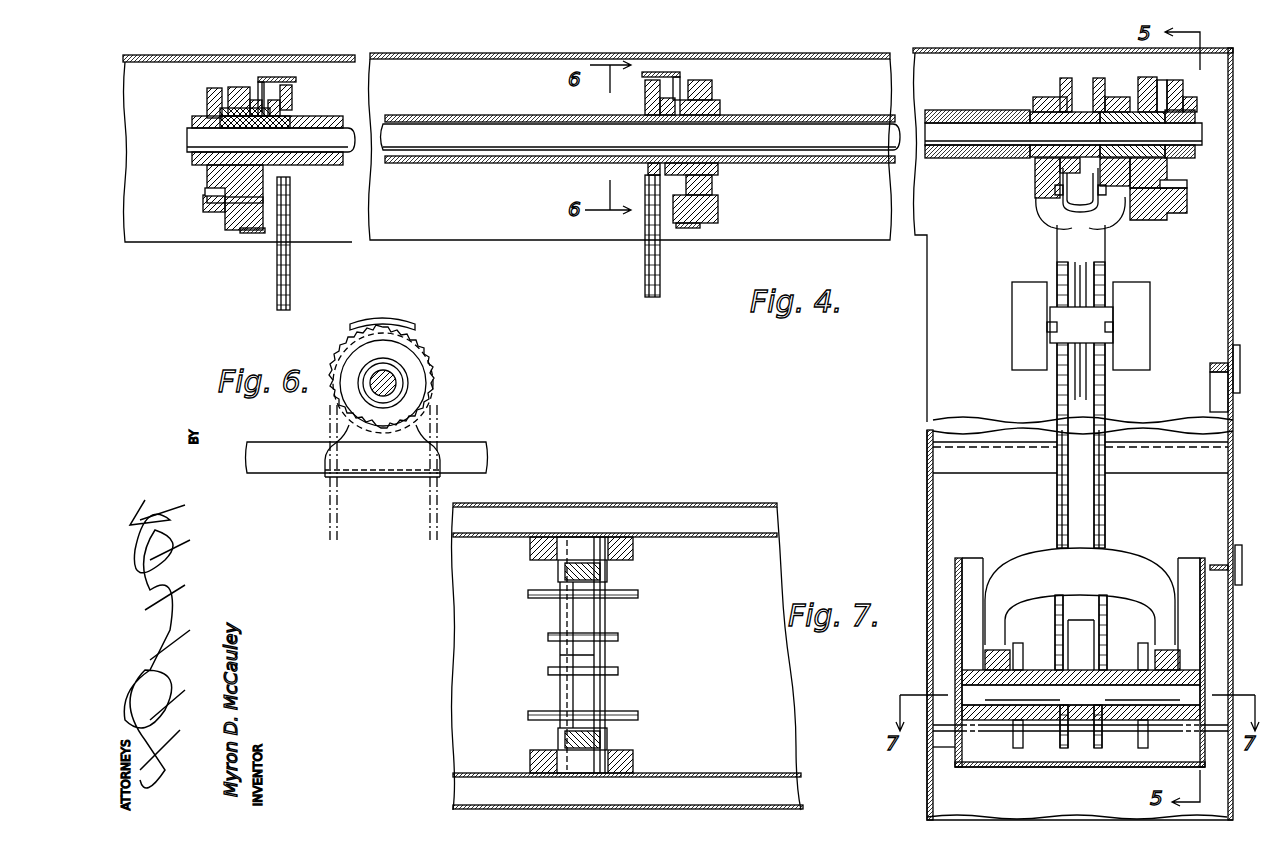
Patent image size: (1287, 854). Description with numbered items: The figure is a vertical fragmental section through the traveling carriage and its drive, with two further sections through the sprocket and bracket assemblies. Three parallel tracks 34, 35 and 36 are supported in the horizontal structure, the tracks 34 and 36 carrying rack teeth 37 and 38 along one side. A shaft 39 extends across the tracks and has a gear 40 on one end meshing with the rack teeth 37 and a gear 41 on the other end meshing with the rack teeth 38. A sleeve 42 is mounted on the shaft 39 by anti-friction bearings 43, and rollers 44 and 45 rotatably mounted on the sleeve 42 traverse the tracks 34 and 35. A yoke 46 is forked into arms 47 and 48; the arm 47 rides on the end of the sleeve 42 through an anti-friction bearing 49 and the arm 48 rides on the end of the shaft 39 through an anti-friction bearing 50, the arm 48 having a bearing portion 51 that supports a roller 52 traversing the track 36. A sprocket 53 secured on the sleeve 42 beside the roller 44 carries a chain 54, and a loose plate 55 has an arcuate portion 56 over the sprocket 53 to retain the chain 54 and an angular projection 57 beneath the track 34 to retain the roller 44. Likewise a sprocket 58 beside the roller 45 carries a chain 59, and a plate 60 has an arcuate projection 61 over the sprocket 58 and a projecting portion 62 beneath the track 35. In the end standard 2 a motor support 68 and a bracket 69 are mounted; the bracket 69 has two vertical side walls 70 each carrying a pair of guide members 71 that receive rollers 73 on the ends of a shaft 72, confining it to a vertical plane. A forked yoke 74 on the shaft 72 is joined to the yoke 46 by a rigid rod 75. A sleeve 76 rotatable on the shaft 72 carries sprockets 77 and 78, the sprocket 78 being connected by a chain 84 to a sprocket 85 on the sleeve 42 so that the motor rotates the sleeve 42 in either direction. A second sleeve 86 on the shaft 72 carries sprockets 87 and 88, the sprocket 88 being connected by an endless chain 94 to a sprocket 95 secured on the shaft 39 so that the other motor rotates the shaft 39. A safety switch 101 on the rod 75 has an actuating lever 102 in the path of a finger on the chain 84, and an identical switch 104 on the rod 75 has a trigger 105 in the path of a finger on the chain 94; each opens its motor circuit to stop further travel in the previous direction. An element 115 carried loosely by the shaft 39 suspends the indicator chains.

In FIG. 7, the end standard 2 is at (641, 503).
In FIG. 4, the track 34 is at (228, 224).
In FIG. 4, the track 35 is at (716, 205).
In FIG. 6, the track 35 is at (488, 457).
In FIG. 4, the track 36 is at (1158, 219).
In FIG. 4, the rack teeth 37 is at (205, 191).
In FIG. 4, the rack teeth 38 is at (1187, 193).
In FIG. 4, the shaft 39 is at (487, 130).
In FIG. 6, the shaft 39 is at (378, 398).
In FIG. 4, the gear 40 is at (207, 101).
In FIG. 4, the gear 41 is at (1184, 95).
In FIG. 4, the sleeve 42 is at (560, 115).
In FIG. 6, the sleeve 42 is at (388, 362).
In FIG. 4, the anti-friction bearings 43 is at (258, 123).
In FIG. 4, the roller 44 is at (240, 87).
In FIG. 4, the roller 45 is at (704, 81).
In FIG. 4, the yoke 46 is at (1093, 238).
In FIG. 4, the yoke arm 47 is at (1036, 185).
In FIG. 4, the yoke arm 48 is at (1113, 186).
In FIG. 4, the anti-friction bearing 49 is at (1033, 106).
In FIG. 4, the anti-friction bearing 50 is at (1137, 122).
In FIG. 4, the bearing portion 51 is at (1162, 84).
In FIG. 4, the roller 52 is at (1148, 77).
In FIG. 4, the sprocket 53 is at (294, 98).
In FIG. 4, the chain 54 is at (292, 283).
In FIG. 4, the plate 55 is at (258, 92).
In FIG. 4, the arcuate portion 56 is at (296, 79).
In FIG. 4, the angular projection 57 is at (253, 233).
In FIG. 4, the sprocket 58 is at (648, 170).
In FIG. 6, the sprocket 58 is at (425, 366).
In FIG. 4, the chain 59 is at (646, 262).
In FIG. 6, the chain 59 is at (337, 524).
In FIG. 4, the plate 60 is at (721, 96).
In FIG. 6, the plate 60 is at (383, 452).
In FIG. 4, the arcuate projection 61 is at (655, 72).
In FIG. 6, the arcuate projection 61 is at (403, 322).
In FIG. 4, the projecting portion 62 is at (690, 228).
In FIG. 6, the projecting portion 62 is at (359, 478).
In FIG. 4, the motor support 68 is at (945, 748).
In FIG. 4, the bracket 69 is at (995, 765).
In FIG. 7, the bracket 69 is at (765, 685).
In FIG. 4, the side walls 70 is at (955, 613).
In FIG. 7, the side walls 70 is at (707, 537).
In FIG. 4, the guide members 71 is at (975, 572).
In FIG. 7, the guide members 71 is at (528, 550).
In FIG. 4, the shaft 72 is at (1081, 702).
In FIG. 7, the shaft 72 is at (605, 698).
In FIG. 4, the rollers 73 is at (962, 675).
In FIG. 7, the rollers 73 is at (574, 545).
In FIG. 4, the forked yoke 74 is at (1122, 558).
In FIG. 7, the forked yoke 74 is at (607, 570).
In FIG. 4, the rigid rod 75 is at (1078, 395).
In FIG. 4, the sleeve 76 is at (1028, 670).
In FIG. 7, the sleeve 76 is at (578, 612).
In FIG. 4, the sprocket 77 is at (1016, 645).
In FIG. 7, the sprocket 77 is at (638, 594).
In FIG. 4, the sprocket 78 is at (1055, 728).
In FIG. 7, the sprocket 78 is at (618, 637).
In FIG. 4, the chain 84 is at (1058, 493).
In FIG. 4, the sprocket 85 is at (1068, 78).
In FIG. 4, the second sleeve 86 is at (1113, 675).
In FIG. 7, the second sleeve 86 is at (570, 690).
In FIG. 4, the sprocket 87 is at (1140, 647).
In FIG. 7, the sprocket 87 is at (528, 716).
In FIG. 4, the sprocket 88 is at (1098, 728).
In FIG. 7, the sprocket 88 is at (548, 671).
In FIG. 4, the endless chain 94 is at (1107, 270).
In FIG. 4, the sprocket 95 is at (1102, 78).
In FIG. 4, the safety switch 101 is at (1012, 314).
In FIG. 4, the actuating lever 102 is at (1047, 327).
In FIG. 4, the switch 104 is at (1137, 316).
In FIG. 4, the trigger 105 is at (1113, 327).
In FIG. 4, the element 115 is at (1080, 190).